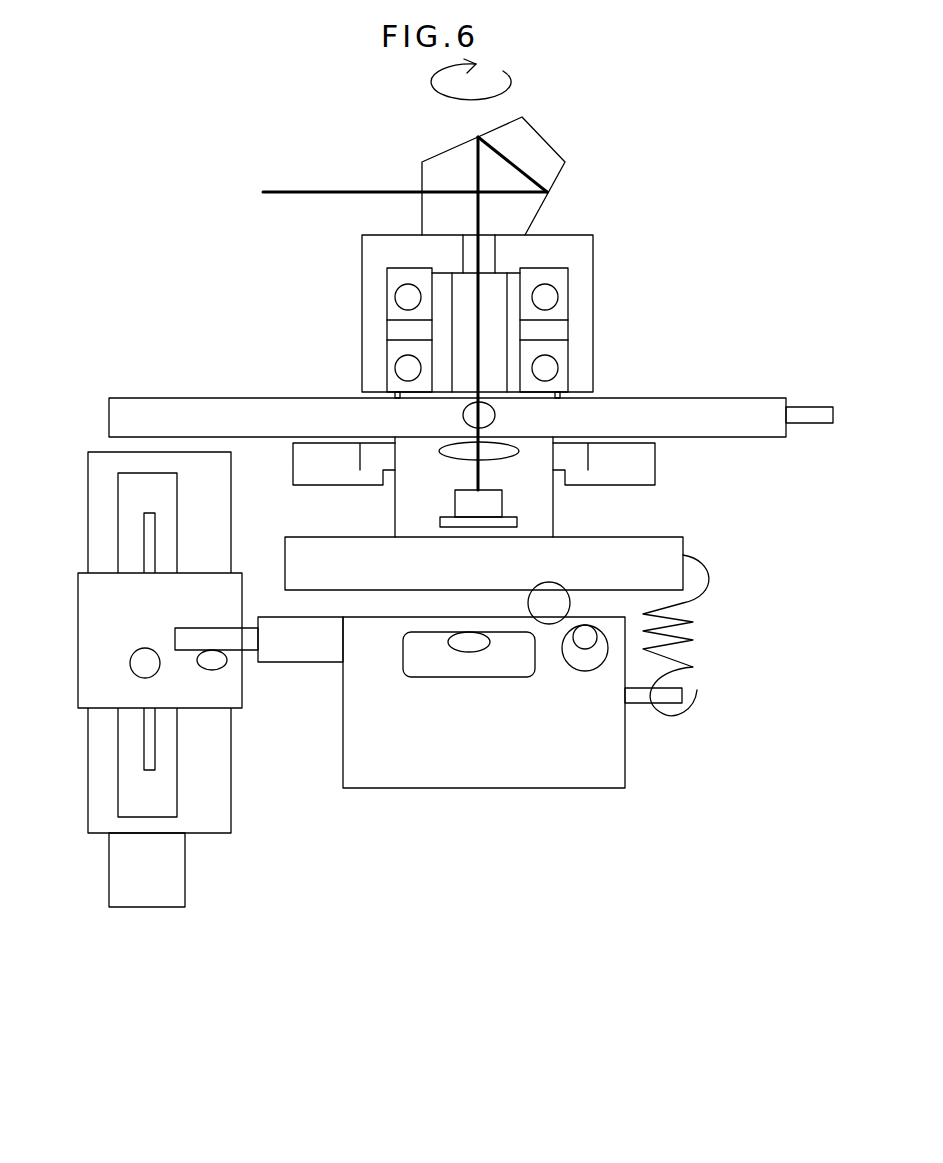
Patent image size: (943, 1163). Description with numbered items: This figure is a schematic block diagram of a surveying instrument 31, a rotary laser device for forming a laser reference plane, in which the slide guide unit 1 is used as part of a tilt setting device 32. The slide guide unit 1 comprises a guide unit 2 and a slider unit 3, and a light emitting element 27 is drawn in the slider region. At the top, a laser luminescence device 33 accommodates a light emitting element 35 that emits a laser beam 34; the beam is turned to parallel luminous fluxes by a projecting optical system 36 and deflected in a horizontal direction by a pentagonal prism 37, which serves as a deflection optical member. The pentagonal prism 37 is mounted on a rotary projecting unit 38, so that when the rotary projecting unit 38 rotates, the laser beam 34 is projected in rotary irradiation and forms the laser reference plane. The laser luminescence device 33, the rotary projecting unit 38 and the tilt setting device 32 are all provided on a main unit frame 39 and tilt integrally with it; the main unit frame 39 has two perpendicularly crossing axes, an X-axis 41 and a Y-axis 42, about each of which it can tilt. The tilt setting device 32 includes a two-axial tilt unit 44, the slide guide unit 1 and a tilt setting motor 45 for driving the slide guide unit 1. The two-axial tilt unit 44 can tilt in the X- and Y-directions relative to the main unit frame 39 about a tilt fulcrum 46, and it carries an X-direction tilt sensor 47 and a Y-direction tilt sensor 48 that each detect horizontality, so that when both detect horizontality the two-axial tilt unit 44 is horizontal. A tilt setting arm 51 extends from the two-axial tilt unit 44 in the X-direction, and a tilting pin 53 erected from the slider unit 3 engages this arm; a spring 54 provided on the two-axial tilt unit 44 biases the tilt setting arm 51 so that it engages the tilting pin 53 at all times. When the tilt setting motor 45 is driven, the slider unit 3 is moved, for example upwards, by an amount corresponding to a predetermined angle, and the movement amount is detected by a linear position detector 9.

The slide guide unit 1 is at (178, 720).
The guide unit 2 is at (88, 520).
The slider unit 3 is at (78, 618).
The linear position detector 9 is at (176, 762).
The light emitting element 27 is at (135, 652).
The surveying instrument 31 is at (484, 272).
The tilt setting device 32 is at (514, 709).
The laser luminescence device 33 is at (452, 487).
The laser beam 34 is at (315, 191).
The light emitting element 35 is at (502, 503).
The projecting optical system 36 is at (447, 457).
The pentagonal prism 37 is at (547, 143).
The rotary projecting unit 38 is at (593, 302).
The main unit frame 39 is at (668, 398).
The X-axis 41 is at (810, 407).
The Y-axis 42 is at (464, 413).
The two-axial tilt unit 44 is at (460, 790).
The tilt setting motor 45 is at (150, 907).
The tilt fulcrum 46 is at (571, 603).
The X-direction tilt sensor 47 is at (447, 677).
The Y-direction tilt sensor 48 is at (583, 671).
The tilt setting arm 51 is at (208, 627).
The tilting pin 53 is at (222, 670).
The spring 54 is at (687, 620).